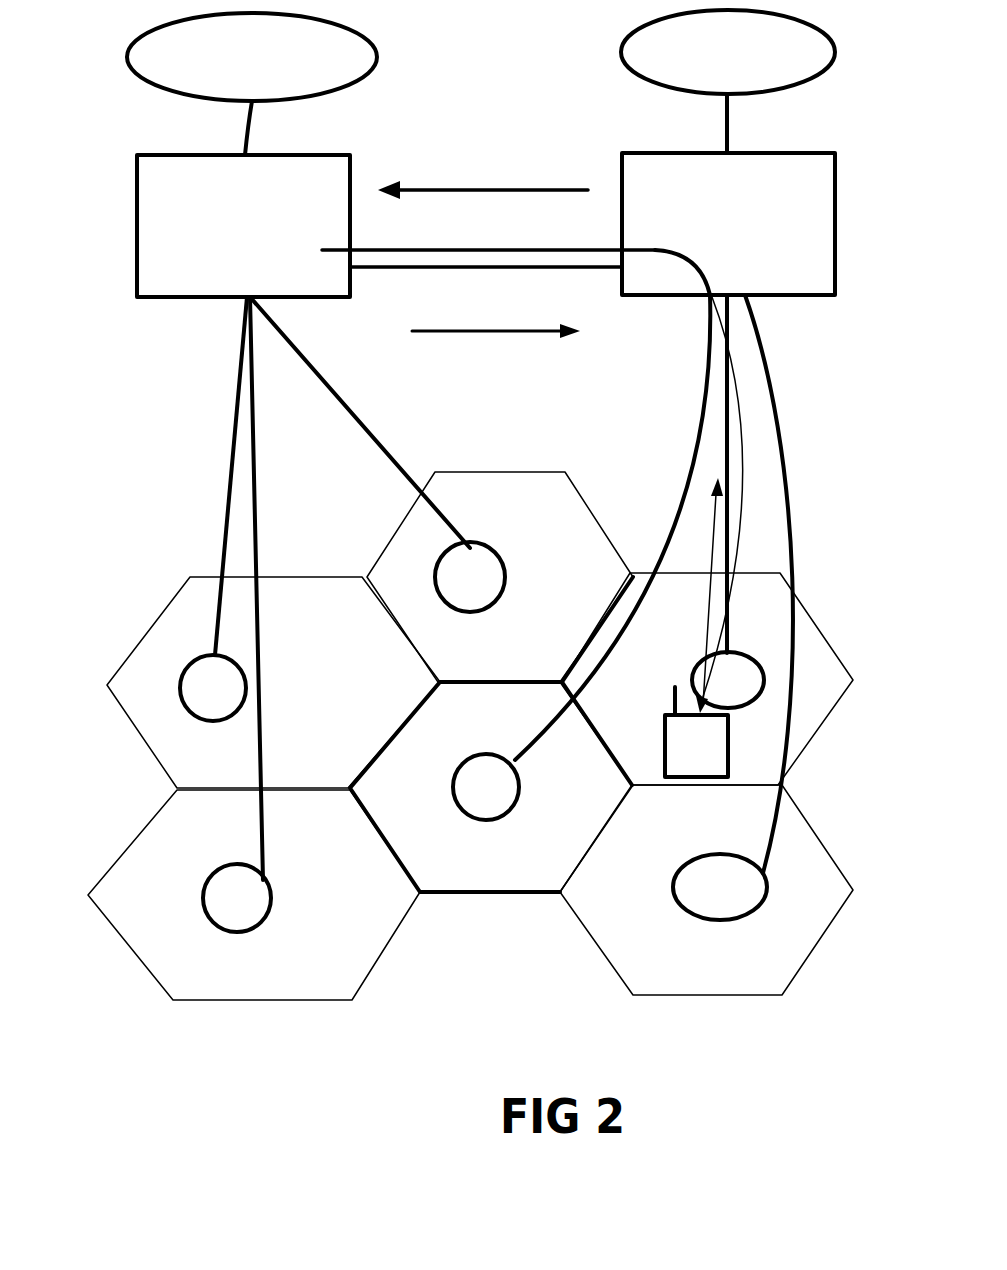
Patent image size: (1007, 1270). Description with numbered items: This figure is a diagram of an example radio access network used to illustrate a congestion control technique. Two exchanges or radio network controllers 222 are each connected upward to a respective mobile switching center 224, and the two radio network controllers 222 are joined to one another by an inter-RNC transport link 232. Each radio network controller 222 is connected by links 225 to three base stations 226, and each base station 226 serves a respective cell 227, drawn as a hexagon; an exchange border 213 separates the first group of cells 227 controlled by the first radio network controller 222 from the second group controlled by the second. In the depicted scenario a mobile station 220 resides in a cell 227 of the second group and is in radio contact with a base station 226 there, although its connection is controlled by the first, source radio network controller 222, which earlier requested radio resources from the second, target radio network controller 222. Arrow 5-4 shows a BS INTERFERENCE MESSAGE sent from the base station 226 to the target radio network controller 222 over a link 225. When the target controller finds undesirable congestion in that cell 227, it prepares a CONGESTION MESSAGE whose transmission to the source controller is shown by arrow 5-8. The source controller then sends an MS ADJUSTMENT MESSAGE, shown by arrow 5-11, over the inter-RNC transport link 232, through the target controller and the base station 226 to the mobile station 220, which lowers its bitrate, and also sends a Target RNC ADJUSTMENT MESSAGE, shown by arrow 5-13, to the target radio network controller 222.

The mobile switching center 224 is at (357, 28).
The radio network controller 222 is at (200, 153).
The link 225 is at (232, 412).
The base station 226 is at (178, 688).
The cell 227 is at (297, 577).
The inter-RNC transport link 232 is at (493, 272).
The boundary between RNC areas 213 is at (400, 858).
The mobile station 220 is at (665, 747).
The arrow 5-8 is at (483, 188).
The arrow 5-11 is at (478, 248).
The arrow 5-13 is at (494, 333).
The arrow 5-4 is at (712, 527).